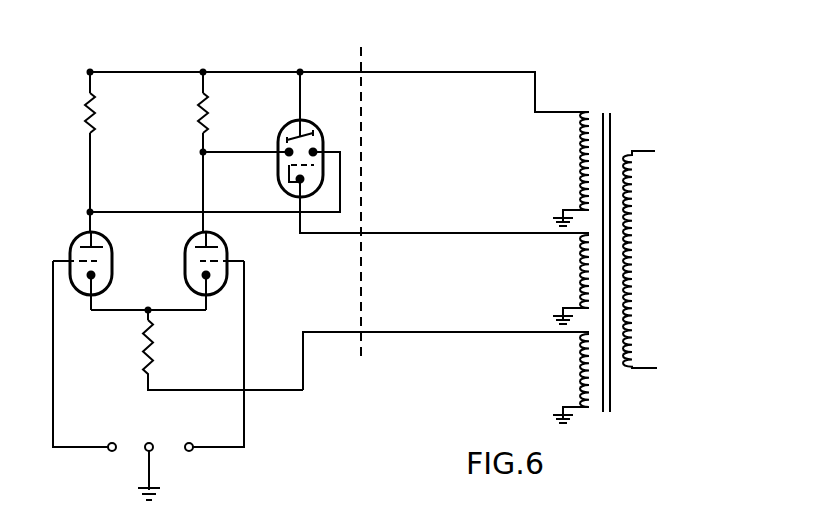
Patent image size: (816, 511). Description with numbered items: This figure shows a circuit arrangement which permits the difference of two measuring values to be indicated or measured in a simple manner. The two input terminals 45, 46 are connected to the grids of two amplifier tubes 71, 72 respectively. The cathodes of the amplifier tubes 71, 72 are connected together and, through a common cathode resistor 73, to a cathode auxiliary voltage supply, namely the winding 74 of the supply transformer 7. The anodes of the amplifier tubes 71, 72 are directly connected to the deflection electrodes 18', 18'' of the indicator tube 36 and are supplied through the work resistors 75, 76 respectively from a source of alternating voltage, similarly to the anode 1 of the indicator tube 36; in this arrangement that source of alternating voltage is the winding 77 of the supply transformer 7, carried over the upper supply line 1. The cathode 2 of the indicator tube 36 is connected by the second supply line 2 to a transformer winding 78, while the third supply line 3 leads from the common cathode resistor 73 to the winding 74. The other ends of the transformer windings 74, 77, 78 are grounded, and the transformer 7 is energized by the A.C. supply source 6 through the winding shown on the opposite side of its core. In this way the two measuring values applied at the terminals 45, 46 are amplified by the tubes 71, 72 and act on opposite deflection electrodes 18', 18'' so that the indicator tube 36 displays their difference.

The anode 1 is at (339, 83).
The cathode 2 is at (444, 206).
The third conductor line 3 is at (446, 352).
The A.C. supply source 6 is at (640, 259).
The transformer 7 is at (605, 253).
The deflection electrode 18' is at (275, 148).
The deflection electrode 18'' is at (330, 148).
The indicator tube 36 is at (303, 134).
The input terminal 45 is at (110, 460).
The input terminal 46 is at (189, 460).
The amplifier tube 71 is at (76, 256).
The amplifier tube 72 is at (218, 258).
The common cathode resistor 73 is at (223, 355).
The winding 74 is at (571, 378).
The work resistor 75 is at (101, 113).
The work resistor 76 is at (214, 113).
The winding 77 is at (571, 169).
The transformer winding 78 is at (571, 279).